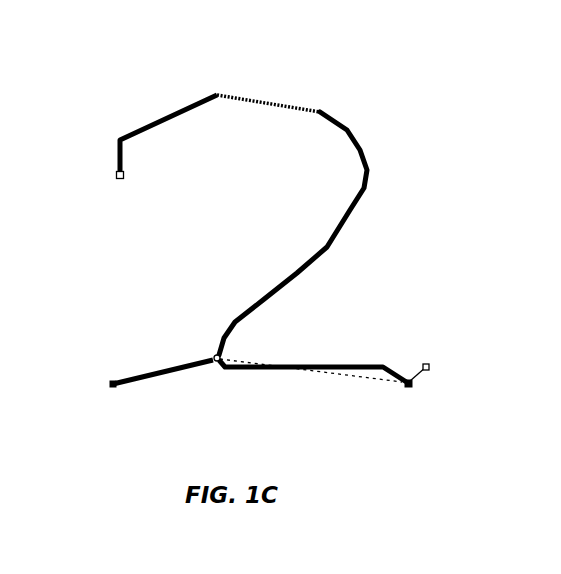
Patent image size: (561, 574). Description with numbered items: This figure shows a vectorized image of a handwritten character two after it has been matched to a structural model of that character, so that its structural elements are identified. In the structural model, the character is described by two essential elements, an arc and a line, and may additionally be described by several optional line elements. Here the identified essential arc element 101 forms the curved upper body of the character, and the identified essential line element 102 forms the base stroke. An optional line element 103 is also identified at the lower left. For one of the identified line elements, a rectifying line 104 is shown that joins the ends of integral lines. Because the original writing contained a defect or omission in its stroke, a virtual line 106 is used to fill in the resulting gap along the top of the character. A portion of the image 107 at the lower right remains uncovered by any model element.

The essential arc element 101 is at (368, 158).
The essential line element 102 is at (263, 372).
The optional line element 103 is at (178, 362).
The rectifying line 104 is at (340, 378).
The virtual line 106 is at (277, 95).
The portion of image not covered by elements 107 is at (424, 382).